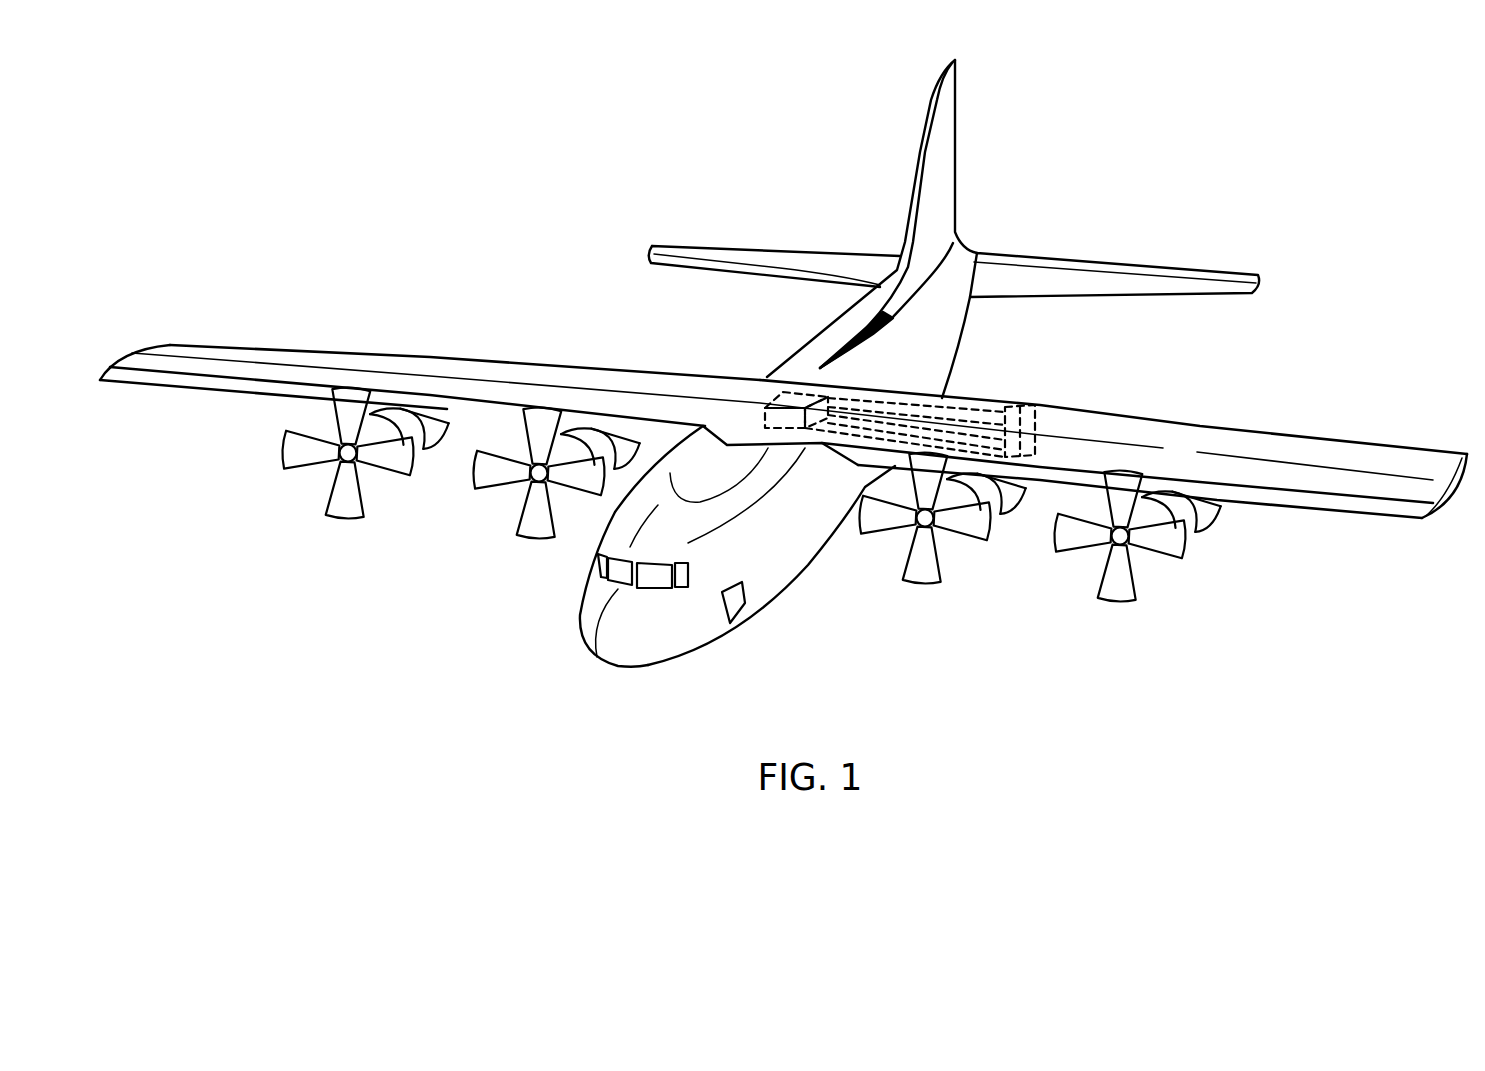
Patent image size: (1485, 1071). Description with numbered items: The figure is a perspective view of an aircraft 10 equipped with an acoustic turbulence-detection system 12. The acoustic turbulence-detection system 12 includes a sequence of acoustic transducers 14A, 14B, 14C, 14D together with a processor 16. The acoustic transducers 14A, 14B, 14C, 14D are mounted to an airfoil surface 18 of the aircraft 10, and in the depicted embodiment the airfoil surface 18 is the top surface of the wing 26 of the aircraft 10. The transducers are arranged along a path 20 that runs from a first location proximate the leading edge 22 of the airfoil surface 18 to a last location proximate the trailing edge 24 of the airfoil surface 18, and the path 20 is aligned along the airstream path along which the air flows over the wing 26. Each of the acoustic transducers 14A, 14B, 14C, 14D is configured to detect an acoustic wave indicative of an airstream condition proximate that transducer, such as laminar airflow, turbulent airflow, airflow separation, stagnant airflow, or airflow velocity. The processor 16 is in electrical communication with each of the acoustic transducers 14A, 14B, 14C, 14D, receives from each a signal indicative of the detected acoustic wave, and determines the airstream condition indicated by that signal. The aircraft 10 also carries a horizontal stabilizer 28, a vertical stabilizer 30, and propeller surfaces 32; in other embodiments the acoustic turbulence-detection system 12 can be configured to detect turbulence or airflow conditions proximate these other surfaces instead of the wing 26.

The aircraft 10 is at (520, 210).
The acoustic turbulence-detection system 12 is at (980, 381).
The acoustic transducer 14A is at (1040, 450).
The acoustic transducer 14B is at (1038, 445).
The acoustic transducer 14C is at (1032, 438).
The acoustic transducer 14D is at (1022, 428).
The processor 16 is at (780, 393).
The airfoil surface 18 is at (1168, 463).
The path 20 is at (1030, 392).
The leading edge 22 is at (1351, 530).
The trailing edge 24 is at (1373, 425).
The wing 26 is at (425, 358).
The horizontal stabilizer 28 is at (786, 253).
The vertical stabilizer 30 is at (945, 168).
The propeller surfaces 32 is at (527, 524).